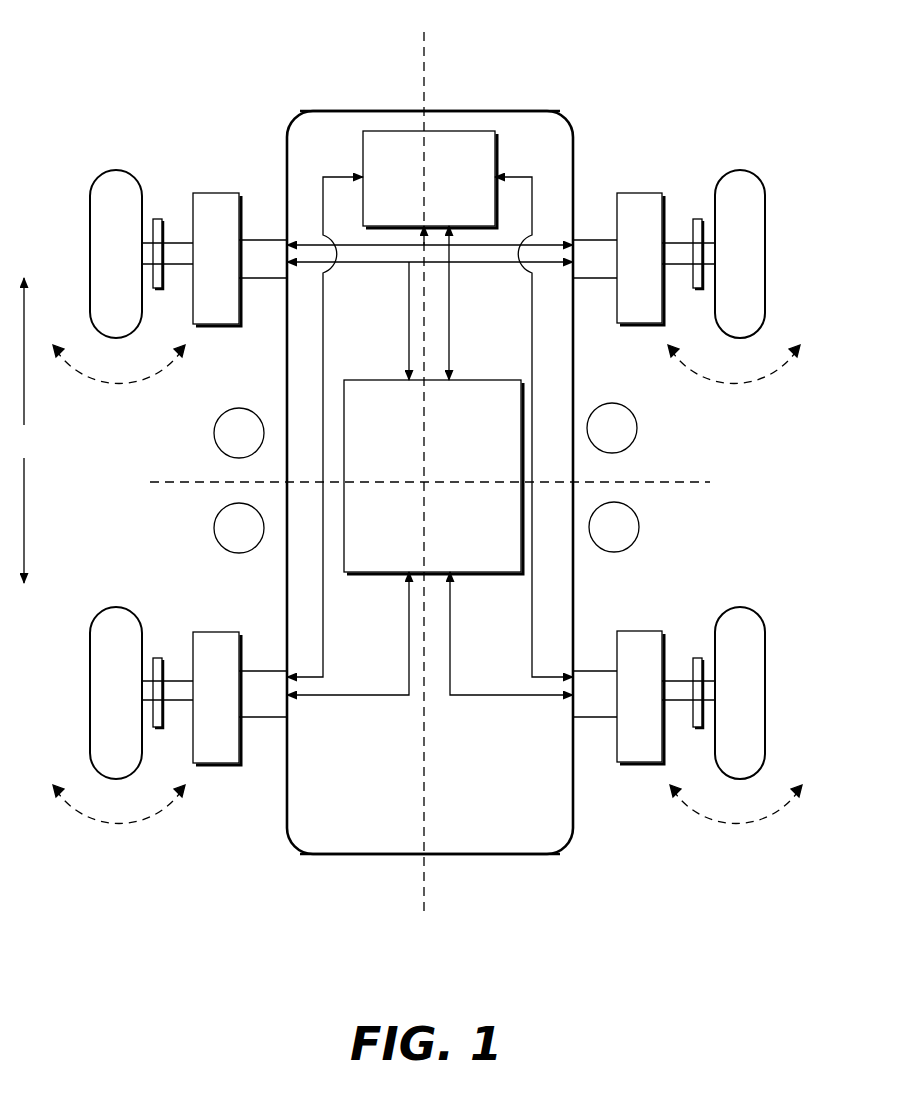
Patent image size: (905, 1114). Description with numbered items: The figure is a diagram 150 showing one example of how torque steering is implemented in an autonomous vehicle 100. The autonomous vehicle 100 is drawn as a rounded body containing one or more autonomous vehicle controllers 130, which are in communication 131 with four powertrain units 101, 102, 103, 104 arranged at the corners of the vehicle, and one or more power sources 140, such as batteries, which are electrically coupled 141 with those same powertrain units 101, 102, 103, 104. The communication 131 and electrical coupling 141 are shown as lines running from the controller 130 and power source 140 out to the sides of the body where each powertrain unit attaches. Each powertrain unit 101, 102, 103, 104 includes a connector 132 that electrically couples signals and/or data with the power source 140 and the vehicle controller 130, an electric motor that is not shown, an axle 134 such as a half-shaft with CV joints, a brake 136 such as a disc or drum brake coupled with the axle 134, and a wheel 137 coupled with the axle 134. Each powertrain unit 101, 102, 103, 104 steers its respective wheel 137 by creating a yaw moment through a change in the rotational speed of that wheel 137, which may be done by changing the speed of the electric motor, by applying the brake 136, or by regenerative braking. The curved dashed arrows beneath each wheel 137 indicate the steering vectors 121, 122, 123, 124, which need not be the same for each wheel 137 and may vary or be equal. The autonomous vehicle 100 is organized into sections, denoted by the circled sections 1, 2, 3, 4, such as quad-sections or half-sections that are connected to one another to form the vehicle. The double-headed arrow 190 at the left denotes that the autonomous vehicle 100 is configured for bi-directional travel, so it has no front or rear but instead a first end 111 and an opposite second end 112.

The diagram 150 is at (133, 51).
The autonomous vehicle 100 is at (349, 815).
The first end 111 is at (472, 105).
The second end 112 is at (463, 861).
The autonomous vehicle controller 130 is at (415, 209).
The power source 140 is at (417, 512).
The communication 131 is at (338, 174).
The electrical coupling 141 is at (363, 265).
The powertrain unit 101 is at (202, 268).
The powertrain unit 102 is at (626, 268).
The powertrain unit 103 is at (202, 706).
The powertrain unit 104 is at (626, 706).
The connector 132 is at (253, 240).
The axle 134 is at (180, 266).
The brake 136 is at (157, 219).
The wheel 137 is at (99, 206).
The steering vector 121 is at (133, 385).
The steering vector 122 is at (723, 385).
The steering vector 123 is at (133, 825).
The steering vector 124 is at (723, 825).
The arrow 190 is at (24, 430).
The section 1 is at (608, 537).
The section 2 is at (233, 538).
The section 3 is at (233, 443).
The section 4 is at (606, 438).